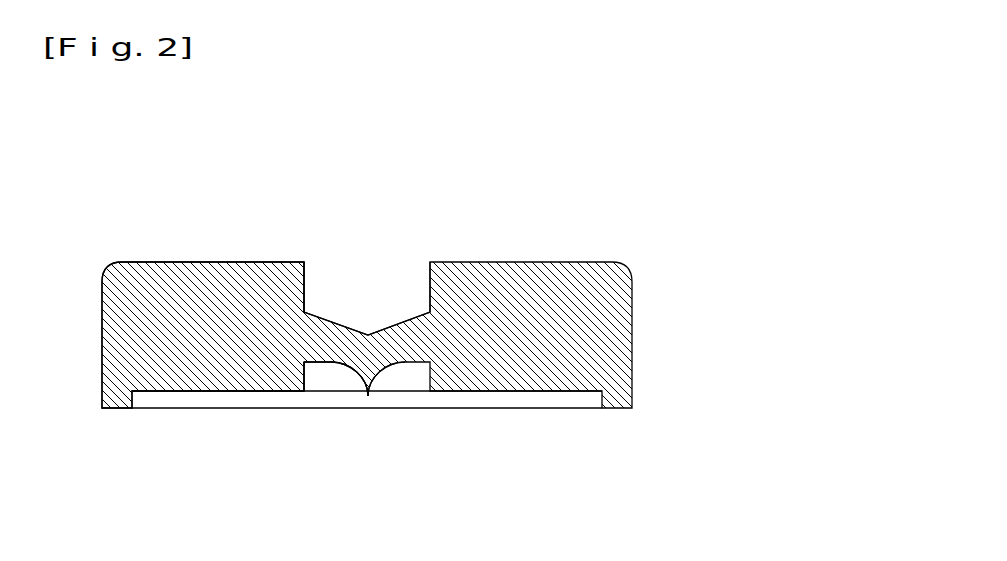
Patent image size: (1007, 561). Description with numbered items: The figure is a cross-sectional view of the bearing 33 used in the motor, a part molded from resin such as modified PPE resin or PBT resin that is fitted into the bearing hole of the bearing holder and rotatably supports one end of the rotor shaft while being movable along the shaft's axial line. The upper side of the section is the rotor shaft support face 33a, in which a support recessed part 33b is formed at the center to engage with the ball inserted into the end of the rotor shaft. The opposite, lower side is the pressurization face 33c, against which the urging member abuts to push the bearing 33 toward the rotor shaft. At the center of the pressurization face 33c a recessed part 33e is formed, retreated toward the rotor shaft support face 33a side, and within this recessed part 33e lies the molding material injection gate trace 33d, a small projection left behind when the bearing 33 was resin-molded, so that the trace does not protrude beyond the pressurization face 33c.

The bearing 33 is at (633, 257).
The rotor shaft support face 33a is at (216, 262).
The support recessed part 33b is at (377, 305).
The pressurization face 33c is at (483, 392).
The molding material injection gate trace 33d is at (368, 396).
The recessed part 33e is at (318, 378).